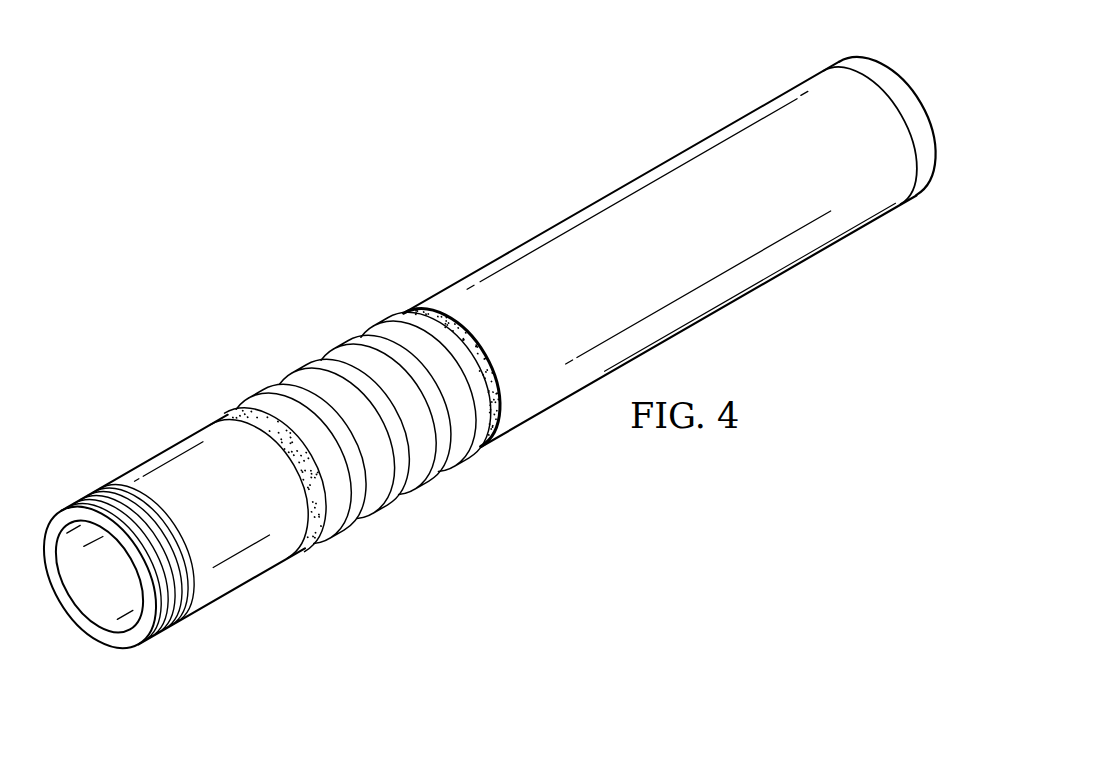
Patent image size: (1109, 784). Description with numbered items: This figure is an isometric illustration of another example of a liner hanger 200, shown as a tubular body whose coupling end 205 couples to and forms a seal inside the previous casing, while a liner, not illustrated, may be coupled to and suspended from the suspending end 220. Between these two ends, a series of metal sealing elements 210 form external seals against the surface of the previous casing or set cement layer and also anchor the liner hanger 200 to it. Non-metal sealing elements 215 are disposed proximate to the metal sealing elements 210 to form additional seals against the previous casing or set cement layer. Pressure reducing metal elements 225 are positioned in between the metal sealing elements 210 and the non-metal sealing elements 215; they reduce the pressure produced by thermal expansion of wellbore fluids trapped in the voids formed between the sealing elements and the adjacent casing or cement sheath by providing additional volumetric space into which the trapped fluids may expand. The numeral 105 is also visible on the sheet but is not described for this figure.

The housing 105 is at (70, 0).
The liner hanger 200 is at (376, 168).
The coupling end 205 is at (80, 647).
The metal sealing elements 210 is at (266, 389).
The non-metal sealing elements 215 is at (440, 332).
The suspending end 220 is at (909, 57).
The pressure reducing metal elements 225 is at (392, 460).